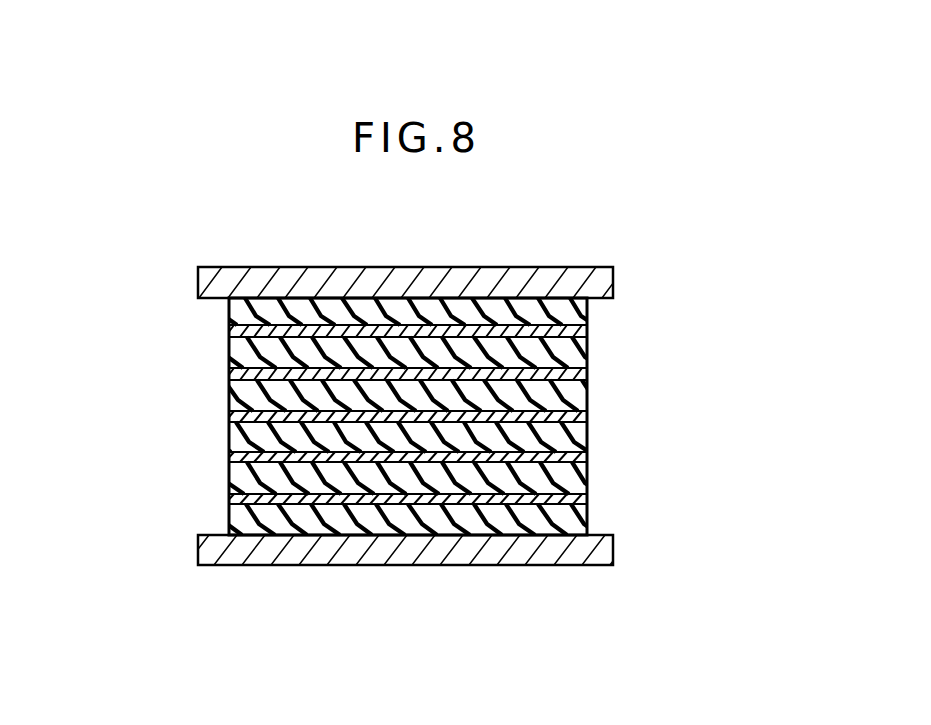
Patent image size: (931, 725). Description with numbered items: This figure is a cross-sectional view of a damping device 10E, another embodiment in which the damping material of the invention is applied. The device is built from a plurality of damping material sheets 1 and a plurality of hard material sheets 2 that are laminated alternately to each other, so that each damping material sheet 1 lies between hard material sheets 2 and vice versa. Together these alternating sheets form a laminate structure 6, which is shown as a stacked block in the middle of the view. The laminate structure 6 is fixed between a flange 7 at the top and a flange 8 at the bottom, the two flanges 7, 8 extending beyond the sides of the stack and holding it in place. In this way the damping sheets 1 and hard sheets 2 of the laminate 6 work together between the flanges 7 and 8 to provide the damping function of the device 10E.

The damping material sheet 1 is at (582, 306).
The hard material sheet 2 is at (588, 330).
The laminate structure 6 is at (209, 423).
The flange 7 is at (612, 281).
The flange 8 is at (600, 553).
The damping device 10E is at (681, 369).